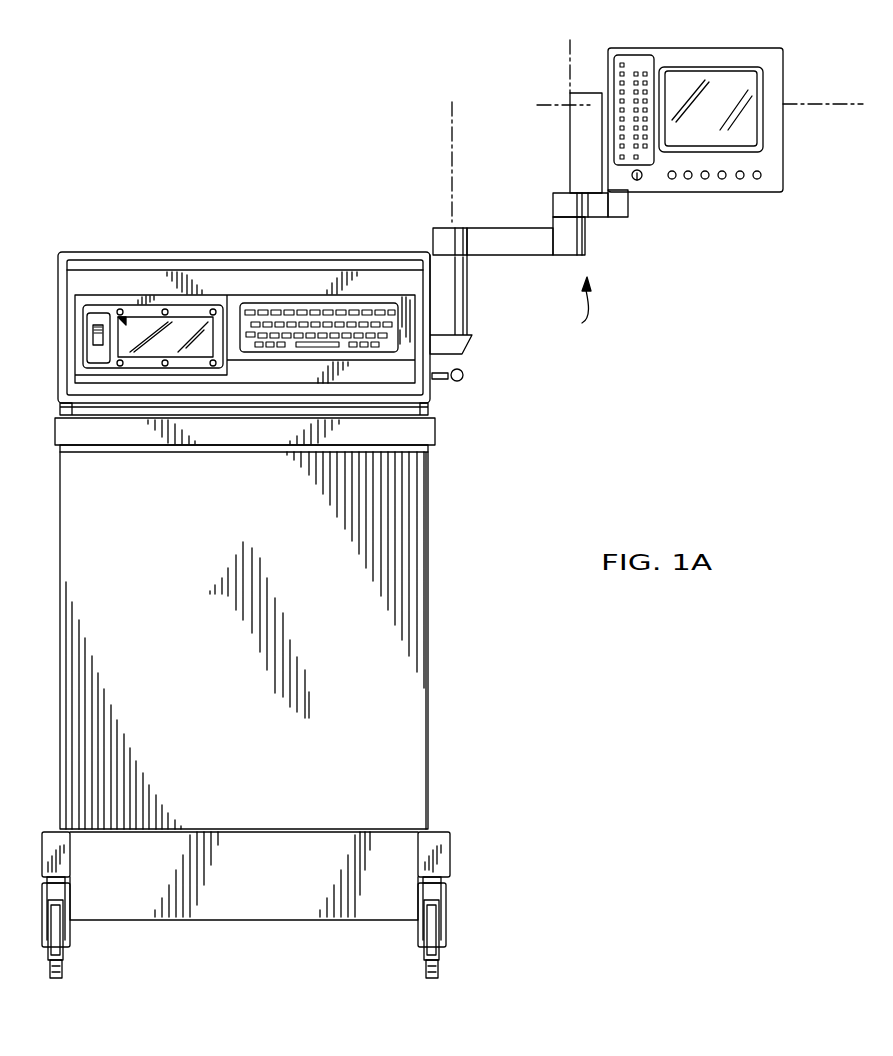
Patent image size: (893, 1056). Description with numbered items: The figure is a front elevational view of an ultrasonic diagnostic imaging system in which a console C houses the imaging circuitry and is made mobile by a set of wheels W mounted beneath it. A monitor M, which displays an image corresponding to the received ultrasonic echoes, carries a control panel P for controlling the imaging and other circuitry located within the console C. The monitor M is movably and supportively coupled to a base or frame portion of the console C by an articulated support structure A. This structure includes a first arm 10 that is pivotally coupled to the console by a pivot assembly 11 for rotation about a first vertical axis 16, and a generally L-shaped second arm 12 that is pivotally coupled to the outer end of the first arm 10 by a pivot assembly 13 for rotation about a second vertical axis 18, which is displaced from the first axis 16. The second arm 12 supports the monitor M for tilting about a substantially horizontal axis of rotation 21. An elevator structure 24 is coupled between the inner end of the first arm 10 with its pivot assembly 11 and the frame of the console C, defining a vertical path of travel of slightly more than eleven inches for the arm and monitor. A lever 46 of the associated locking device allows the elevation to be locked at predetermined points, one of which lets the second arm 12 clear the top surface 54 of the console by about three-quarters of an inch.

The top surface 54 is at (205, 252).
The console C is at (430, 502).
The wheels W is at (70, 937).
The pivot assembly 11 is at (433, 238).
The elevator structure 24 is at (472, 320).
The first arm 10 is at (510, 255).
The pivot assembly 13 is at (555, 210).
The second arm 12 is at (610, 218).
The second vertical axis 18 is at (568, 148).
The horizontal axis of rotation 21 is at (590, 103).
The first vertical axis 16 is at (452, 183).
The monitor M is at (713, 194).
The control panel P is at (640, 63).
The lever 46 is at (448, 380).
The articulated support structure A is at (575, 309).